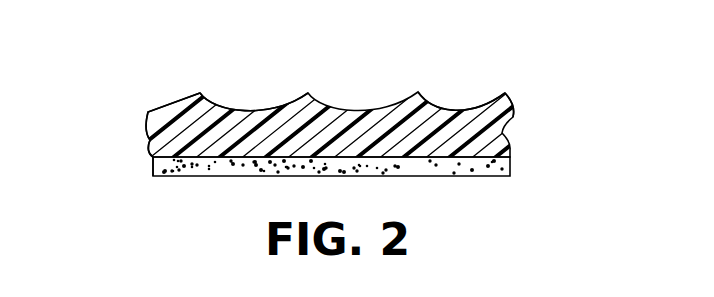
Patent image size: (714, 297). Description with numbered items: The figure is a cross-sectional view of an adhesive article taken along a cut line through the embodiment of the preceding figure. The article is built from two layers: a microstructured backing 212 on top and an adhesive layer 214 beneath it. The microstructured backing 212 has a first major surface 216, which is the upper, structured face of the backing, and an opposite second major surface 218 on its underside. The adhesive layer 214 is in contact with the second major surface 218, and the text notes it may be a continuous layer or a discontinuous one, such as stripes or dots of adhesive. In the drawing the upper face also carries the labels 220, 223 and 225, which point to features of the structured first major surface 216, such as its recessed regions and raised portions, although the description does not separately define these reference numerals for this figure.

The microstructured backing 212 is at (503, 135).
The adhesive layer 214 is at (508, 166).
The first major surface 216 is at (172, 101).
The second major surface 218 is at (149, 165).
The valley of structured surface 220 is at (240, 110).
The top surface of abrasive layer 223 is at (505, 93).
The peak/ridge of structured surface 225 is at (467, 110).